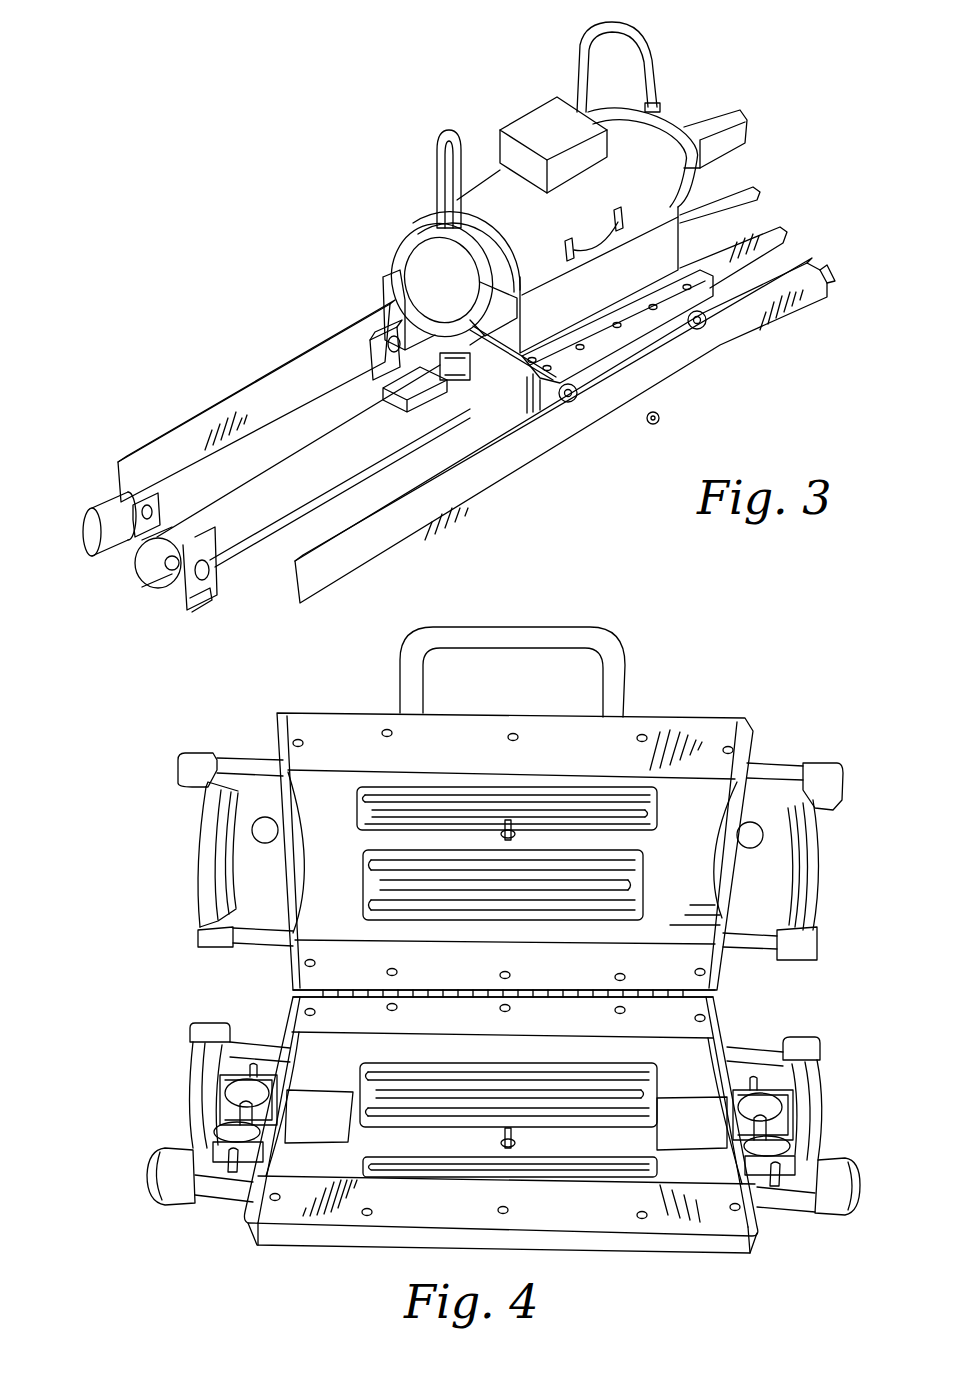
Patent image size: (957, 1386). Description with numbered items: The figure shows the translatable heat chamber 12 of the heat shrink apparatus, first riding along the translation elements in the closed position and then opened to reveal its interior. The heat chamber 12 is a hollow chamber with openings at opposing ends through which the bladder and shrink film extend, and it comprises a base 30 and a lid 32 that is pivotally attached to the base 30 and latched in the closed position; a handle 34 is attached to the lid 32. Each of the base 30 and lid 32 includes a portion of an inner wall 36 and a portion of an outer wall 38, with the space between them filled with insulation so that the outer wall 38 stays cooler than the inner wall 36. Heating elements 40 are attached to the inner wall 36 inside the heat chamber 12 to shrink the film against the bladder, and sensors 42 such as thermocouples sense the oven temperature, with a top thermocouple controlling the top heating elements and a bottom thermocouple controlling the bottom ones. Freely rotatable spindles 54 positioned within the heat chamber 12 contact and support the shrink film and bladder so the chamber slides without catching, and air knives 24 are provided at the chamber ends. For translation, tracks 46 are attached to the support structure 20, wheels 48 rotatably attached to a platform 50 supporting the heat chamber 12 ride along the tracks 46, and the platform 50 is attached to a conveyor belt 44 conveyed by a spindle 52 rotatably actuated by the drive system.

In FIG. 3, the translatable heat chamber 12 is at (517, 122).
In FIG. 4, the translatable heat chamber 12 is at (100, 847).
In FIG. 3, the support structure 20 is at (460, 497).
In FIG. 3, the air knives 24 is at (400, 247).
In FIG. 4, the air knives 24 is at (212, 867).
In FIG. 3, the base 30 is at (630, 280).
In FIG. 4, the base 30 is at (660, 1243).
In FIG. 3, the lid 32 is at (480, 180).
In FIG. 4, the lid 32 is at (690, 717).
In FIG. 3, the handle 34 is at (593, 230).
In FIG. 4, the handle 34 is at (547, 633).
In FIG. 4, the inner wall 36 is at (327, 787).
In FIG. 3, the outer wall 38 is at (700, 110).
In FIG. 4, the heating elements 40 is at (447, 803).
In FIG. 4, the sensors 42 is at (510, 833).
In FIG. 3, the conveyor belt 44 is at (270, 470).
In FIG. 3, the tracks 46 is at (367, 313).
In FIG. 3, the wheels 48 is at (703, 327).
In FIG. 3, the platform 50 is at (717, 277).
In FIG. 3, the spindle 52 is at (160, 587).
In FIG. 4, the freely rotatable spindles 54 is at (237, 1117).